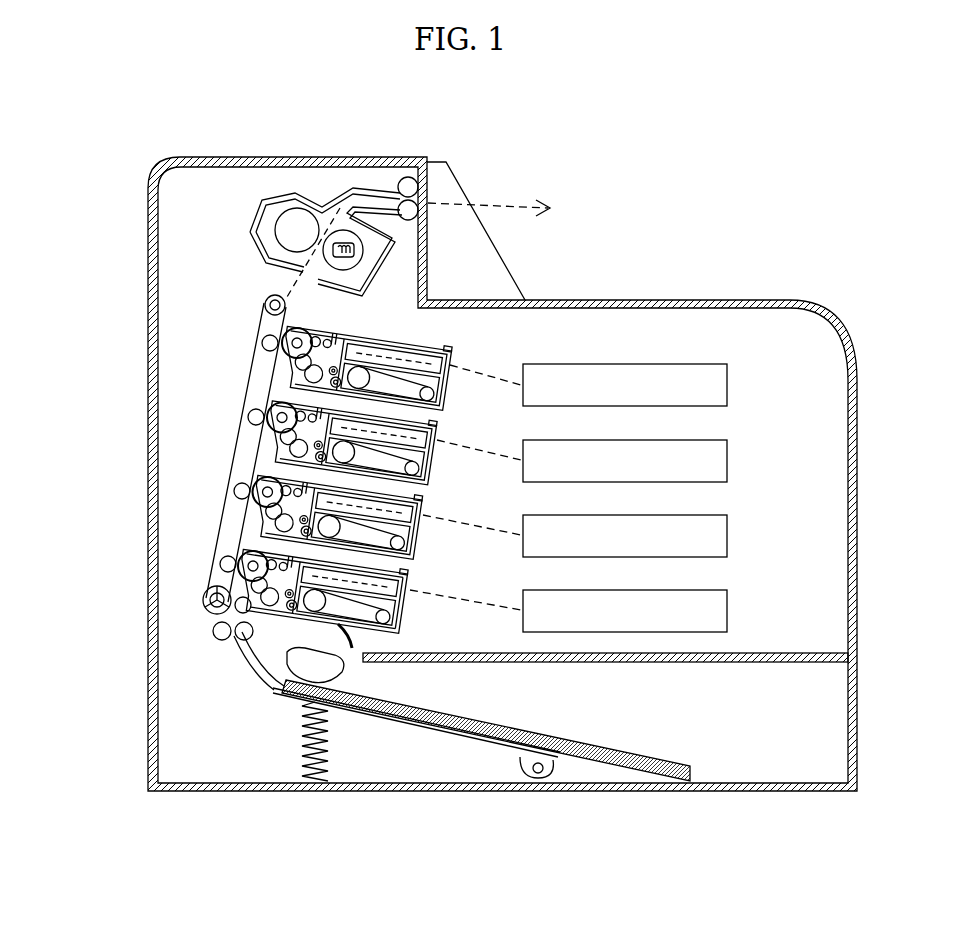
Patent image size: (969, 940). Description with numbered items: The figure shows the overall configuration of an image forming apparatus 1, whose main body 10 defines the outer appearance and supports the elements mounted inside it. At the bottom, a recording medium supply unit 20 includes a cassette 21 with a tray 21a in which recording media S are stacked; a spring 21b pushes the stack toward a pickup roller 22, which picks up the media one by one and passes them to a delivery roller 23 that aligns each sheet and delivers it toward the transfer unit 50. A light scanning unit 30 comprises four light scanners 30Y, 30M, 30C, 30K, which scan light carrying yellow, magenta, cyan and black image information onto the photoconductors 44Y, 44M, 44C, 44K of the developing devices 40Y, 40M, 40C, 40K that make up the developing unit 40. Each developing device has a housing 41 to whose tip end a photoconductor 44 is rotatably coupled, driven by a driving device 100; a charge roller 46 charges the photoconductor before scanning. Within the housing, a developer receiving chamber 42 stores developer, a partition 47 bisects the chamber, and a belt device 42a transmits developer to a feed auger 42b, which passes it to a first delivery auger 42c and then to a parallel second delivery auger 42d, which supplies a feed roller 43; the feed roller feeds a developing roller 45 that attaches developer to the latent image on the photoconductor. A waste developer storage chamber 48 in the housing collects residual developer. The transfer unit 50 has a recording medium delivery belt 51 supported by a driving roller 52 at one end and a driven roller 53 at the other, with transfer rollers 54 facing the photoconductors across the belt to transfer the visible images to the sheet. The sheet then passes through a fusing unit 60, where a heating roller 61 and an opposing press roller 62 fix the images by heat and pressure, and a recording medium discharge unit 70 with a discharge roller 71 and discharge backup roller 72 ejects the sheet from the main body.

The image forming apparatus 1 is at (475, 873).
The main body 10 is at (808, 302).
The recording medium supply unit 20 is at (515, 736).
The cassette 21 is at (710, 786).
The tray 21a is at (445, 745).
The spring 21b is at (305, 748).
The pickup roller 22 is at (345, 672).
The delivery roller 23 is at (222, 640).
The light scanning unit 30 is at (683, 496).
The light scanner 30K is at (728, 385).
The light scanner 30C is at (728, 461).
The light scanner 30M is at (728, 536).
The light scanner 30Y is at (656, 610).
The developing unit 40 is at (327, 456).
The developing device 40K is at (460, 352).
The developing device 40C is at (401, 443).
The developing device 40M is at (316, 521).
The developing device 40Y is at (377, 599).
The housing 41 is at (359, 638).
The developer receiving chamber 42 is at (346, 607).
The belt device 42a is at (397, 543).
The feed auger 42b is at (274, 511).
The first delivery auger 42c is at (360, 531).
The second delivery auger 42d is at (284, 523).
The feed roller 43 is at (273, 610).
The photoconductor 44 is at (183, 460).
The photoconductor 44K is at (268, 343).
The photoconductor 44C is at (275, 410).
The photoconductor 44M is at (260, 486).
The photoconductor 44Y is at (243, 568).
The developing roller 45 is at (252, 608).
The charge roller 46 is at (254, 500).
The partition 47 is at (415, 516).
The waste developer storage chamber 48 is at (456, 475).
The transfer unit 50 is at (195, 450).
The recording medium delivery belt 51 is at (266, 325).
The driving roller 52 is at (270, 298).
The driven roller 53 is at (205, 605).
The transfer rollers 54 is at (222, 560).
The fusing unit 60 is at (253, 212).
The heating roller 61 is at (355, 258).
The press roller 62 is at (292, 215).
The recording medium discharge unit 70 is at (468, 174).
The discharge roller 71 is at (410, 178).
The discharge backup roller 72 is at (427, 227).
The driving device 100 is at (399, 602).
The recording media S is at (552, 736).